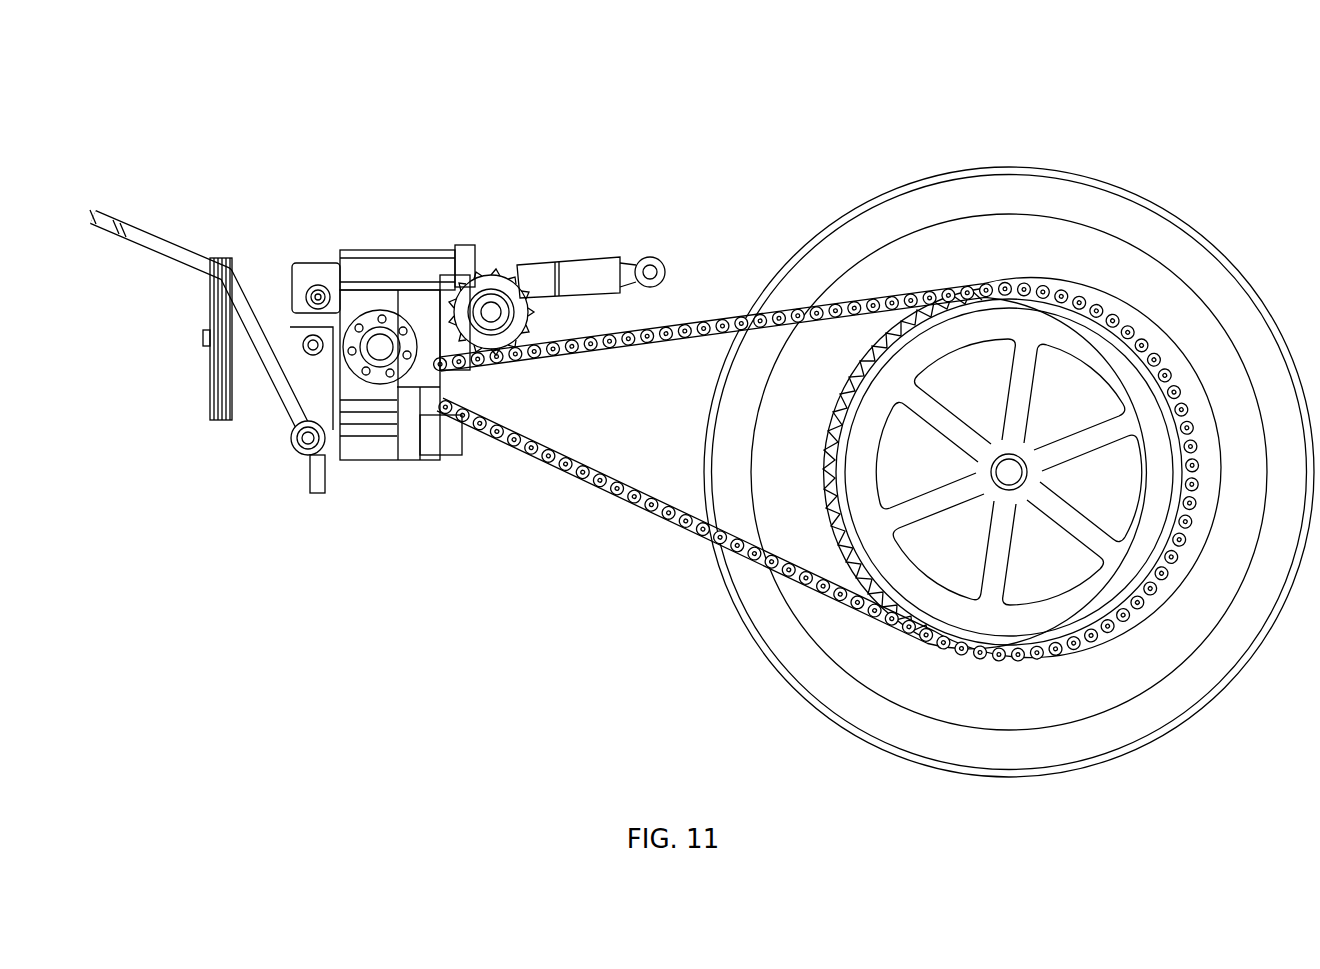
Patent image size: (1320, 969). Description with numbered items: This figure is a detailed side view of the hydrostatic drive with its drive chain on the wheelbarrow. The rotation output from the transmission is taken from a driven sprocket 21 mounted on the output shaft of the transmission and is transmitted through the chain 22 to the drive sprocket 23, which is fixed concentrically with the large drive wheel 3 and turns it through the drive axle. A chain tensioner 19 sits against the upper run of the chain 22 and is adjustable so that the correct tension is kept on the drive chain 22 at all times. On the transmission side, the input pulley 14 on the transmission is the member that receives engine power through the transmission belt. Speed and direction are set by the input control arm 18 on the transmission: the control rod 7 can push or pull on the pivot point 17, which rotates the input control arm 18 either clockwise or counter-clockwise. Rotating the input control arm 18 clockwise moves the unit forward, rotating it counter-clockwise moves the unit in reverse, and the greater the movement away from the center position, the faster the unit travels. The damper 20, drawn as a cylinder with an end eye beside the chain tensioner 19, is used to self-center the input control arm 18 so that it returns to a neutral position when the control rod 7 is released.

The drive wheel 3 is at (1056, 142).
The control rod 7 is at (142, 214).
The input pulley on the transmission 14 is at (170, 443).
The pivot point 17 is at (288, 478).
The input control arm 18 is at (288, 297).
The chain tensioner 19 is at (488, 246).
The damper 20 is at (601, 232).
The driven sprocket 21 is at (440, 380).
The chain 22 is at (650, 545).
The drive sprocket 23 is at (913, 552).